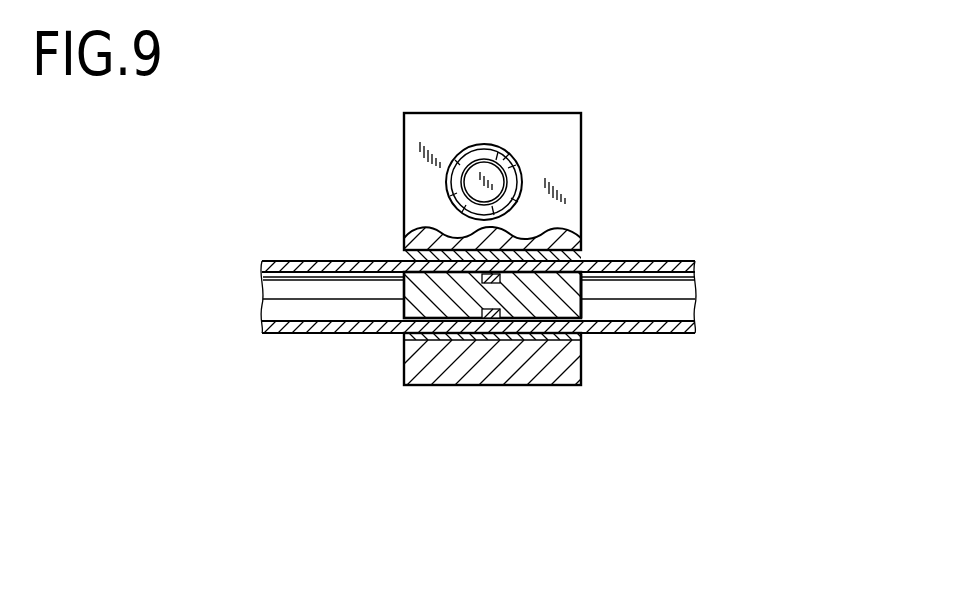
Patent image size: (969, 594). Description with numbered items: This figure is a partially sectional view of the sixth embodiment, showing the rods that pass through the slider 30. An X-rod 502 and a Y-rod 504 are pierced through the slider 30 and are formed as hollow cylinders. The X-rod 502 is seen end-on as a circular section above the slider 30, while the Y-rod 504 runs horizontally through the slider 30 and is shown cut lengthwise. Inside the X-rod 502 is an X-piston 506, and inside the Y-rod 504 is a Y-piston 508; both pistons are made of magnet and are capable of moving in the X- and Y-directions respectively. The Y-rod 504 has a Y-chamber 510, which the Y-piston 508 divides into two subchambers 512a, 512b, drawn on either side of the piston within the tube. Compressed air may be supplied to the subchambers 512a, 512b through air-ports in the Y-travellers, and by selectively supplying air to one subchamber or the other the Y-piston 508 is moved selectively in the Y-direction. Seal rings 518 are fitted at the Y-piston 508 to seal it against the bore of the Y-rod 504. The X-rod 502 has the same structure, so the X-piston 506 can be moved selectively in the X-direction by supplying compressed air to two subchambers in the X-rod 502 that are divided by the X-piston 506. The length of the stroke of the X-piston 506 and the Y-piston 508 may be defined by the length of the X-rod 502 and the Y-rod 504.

The slider 30 is at (580, 113).
The X-rod 502 is at (478, 153).
The Y-rod 504 is at (637, 262).
The X-piston 506 is at (483, 182).
The Y-piston 508 is at (581, 305).
The Y-chamber 510 is at (385, 317).
The subchamber 512a is at (674, 311).
The subchamber 512b is at (277, 312).
The seal rings 518 is at (490, 330).